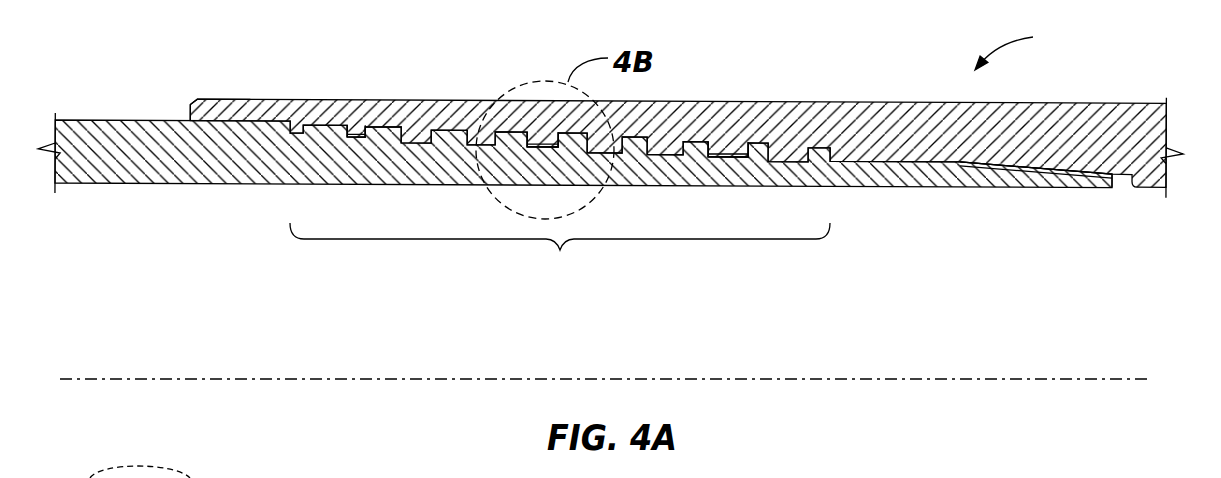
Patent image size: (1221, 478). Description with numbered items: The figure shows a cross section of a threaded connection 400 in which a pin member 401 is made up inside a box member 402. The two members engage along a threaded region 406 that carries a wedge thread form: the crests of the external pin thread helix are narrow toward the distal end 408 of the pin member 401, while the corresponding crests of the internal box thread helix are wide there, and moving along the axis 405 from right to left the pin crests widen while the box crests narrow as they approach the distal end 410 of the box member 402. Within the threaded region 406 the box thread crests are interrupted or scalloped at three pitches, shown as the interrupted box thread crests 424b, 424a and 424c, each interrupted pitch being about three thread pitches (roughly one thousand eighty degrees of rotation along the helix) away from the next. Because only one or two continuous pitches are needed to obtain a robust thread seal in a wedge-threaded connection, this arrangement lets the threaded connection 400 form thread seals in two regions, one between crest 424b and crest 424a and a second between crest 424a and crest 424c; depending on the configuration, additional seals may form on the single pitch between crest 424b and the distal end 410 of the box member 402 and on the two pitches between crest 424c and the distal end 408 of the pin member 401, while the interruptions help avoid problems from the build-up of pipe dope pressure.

The threaded connection 400 is at (1036, 46).
The pin member 401 is at (168, 165).
The box member 402 is at (953, 144).
The axis 405 is at (979, 378).
The threaded region 406 is at (560, 258).
The distal end of pin member 408 is at (1103, 190).
The distal end of box member 410 is at (229, 98).
The interrupted box thread crest 424a is at (545, 143).
The interrupted box thread crest 424b is at (353, 132).
The interrupted box thread crest 424c is at (727, 152).